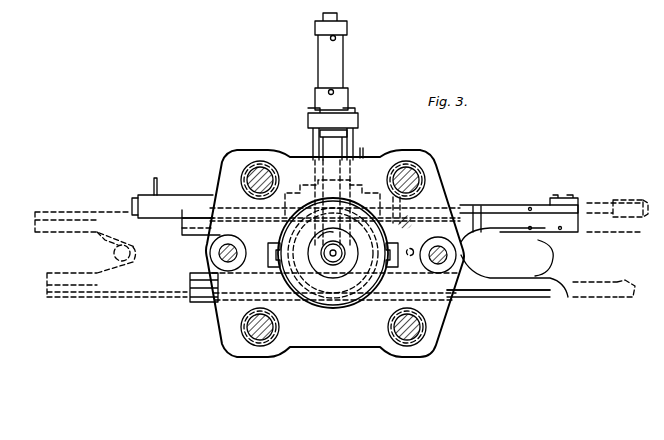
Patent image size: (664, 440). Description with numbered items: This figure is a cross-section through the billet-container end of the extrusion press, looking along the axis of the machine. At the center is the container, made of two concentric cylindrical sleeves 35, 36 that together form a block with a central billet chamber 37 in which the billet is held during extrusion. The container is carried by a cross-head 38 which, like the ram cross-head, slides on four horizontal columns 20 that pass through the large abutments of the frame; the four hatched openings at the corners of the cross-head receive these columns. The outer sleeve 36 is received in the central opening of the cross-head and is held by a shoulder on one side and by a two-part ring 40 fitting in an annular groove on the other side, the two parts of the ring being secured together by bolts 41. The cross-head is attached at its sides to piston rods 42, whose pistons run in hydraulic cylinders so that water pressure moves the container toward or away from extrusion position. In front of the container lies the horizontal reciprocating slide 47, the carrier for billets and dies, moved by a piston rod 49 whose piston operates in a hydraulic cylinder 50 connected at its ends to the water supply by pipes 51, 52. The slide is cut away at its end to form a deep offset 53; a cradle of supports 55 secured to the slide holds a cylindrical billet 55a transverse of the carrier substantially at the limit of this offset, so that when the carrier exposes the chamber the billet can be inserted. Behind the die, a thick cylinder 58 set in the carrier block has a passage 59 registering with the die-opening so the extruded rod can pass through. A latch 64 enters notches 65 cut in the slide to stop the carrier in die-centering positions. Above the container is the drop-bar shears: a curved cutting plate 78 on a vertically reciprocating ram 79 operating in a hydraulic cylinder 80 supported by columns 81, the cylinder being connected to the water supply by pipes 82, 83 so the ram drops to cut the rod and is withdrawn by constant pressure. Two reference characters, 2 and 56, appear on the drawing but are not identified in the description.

The frame 2 is at (417, 333).
The horizontal columns 20 is at (250, 177).
The inner cylindrical sleeve 35 is at (352, 255).
The outer cylindrical sleeve 36 is at (333, 254).
The central billet chamber 37 is at (347, 252).
The cross-head 38 is at (360, 347).
The two-part ring 40 is at (343, 310).
The bolts 41 is at (273, 270).
The piston rods 42 is at (217, 250).
The horizontal reciprocating slide 47 is at (186, 222).
The piston rod 49 is at (502, 192).
The hydraulic cylinder 50 is at (203, 193).
The pipe 51 is at (154, 184).
The pipe 52 is at (364, 155).
The offset 53 is at (541, 262).
The supports 55 is at (85, 257).
The billet 55a is at (116, 247).
The pin 56 is at (415, 243).
The thick cylinder 58 is at (340, 276).
The passage 59 is at (332, 253).
The latch 64 is at (413, 223).
The notches 65 is at (473, 222).
The curved cutting plate 78 is at (323, 238).
The vertically reciprocating ram 79 is at (335, 147).
The hydraulic cylinder 80 is at (343, 83).
The columns 81 is at (313, 140).
The pipe 82 is at (331, 39).
The pipe 83 is at (329, 92).